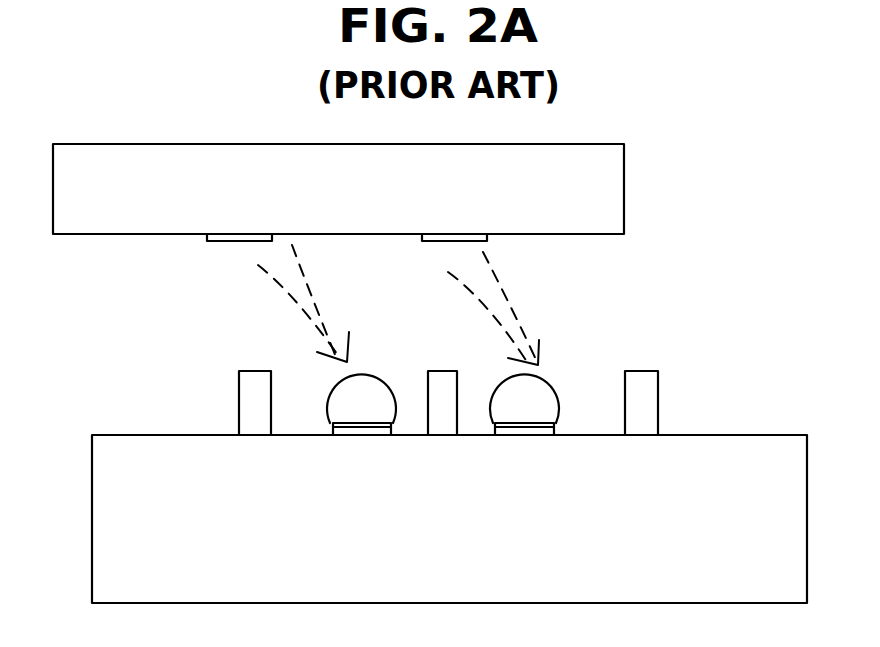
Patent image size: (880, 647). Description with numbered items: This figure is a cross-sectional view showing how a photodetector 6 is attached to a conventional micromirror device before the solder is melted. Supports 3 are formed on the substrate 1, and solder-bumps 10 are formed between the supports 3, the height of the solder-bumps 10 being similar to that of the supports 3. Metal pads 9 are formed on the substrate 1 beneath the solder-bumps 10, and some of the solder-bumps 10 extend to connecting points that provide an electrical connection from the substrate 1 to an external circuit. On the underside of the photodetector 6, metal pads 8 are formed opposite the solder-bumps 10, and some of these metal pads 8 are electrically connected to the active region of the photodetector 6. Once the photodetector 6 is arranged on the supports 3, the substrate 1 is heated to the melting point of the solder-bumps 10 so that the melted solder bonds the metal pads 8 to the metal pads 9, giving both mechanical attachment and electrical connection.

The substrate 1 is at (92, 512).
The supports 3 is at (239, 390).
The photodetector 6 is at (624, 188).
The metal pads 8 is at (223, 241).
The metal pads 9 is at (358, 436).
The solder-bumps 10 is at (555, 390).